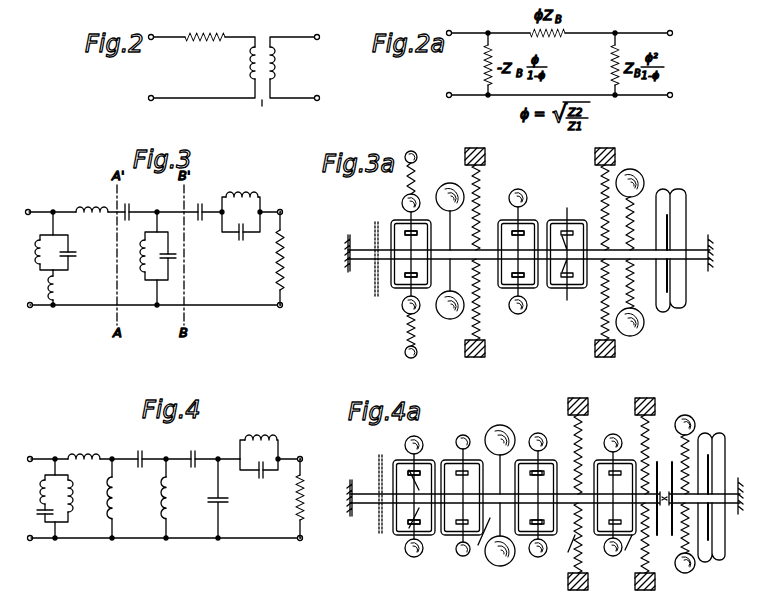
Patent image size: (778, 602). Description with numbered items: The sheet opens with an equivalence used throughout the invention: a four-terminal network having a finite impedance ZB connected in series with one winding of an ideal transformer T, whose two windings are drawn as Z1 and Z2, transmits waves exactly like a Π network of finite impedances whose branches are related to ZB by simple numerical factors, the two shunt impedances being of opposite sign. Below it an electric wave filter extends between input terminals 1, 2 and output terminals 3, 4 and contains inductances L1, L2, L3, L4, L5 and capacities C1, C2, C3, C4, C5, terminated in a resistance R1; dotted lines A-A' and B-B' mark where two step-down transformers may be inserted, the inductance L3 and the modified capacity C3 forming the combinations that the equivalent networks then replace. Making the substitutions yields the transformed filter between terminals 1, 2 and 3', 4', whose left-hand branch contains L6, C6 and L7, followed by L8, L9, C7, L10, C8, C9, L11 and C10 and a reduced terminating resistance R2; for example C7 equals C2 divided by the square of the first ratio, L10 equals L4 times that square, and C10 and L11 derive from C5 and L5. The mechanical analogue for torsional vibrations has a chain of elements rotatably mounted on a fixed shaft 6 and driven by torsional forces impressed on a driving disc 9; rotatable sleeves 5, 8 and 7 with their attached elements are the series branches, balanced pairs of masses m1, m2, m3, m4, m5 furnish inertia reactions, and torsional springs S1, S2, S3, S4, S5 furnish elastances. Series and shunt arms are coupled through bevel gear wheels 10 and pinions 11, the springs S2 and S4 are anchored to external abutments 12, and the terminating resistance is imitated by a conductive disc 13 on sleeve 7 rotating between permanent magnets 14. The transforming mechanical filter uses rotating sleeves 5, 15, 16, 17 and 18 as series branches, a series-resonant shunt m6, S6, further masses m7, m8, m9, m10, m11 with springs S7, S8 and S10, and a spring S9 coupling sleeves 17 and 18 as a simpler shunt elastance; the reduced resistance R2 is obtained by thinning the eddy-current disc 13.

In FIG. 3, the terminal 1 is at (28, 199).
In FIG. 4, the terminal 1 is at (28, 447).
In FIG. 3, the terminal 2 is at (25, 316).
In FIG. 4, the terminal 2 is at (26, 550).
In FIG. 3, the terminal 3 is at (281, 199).
In FIG. 3, the terminal 4 is at (285, 314).
In FIG. 4, the terminal 3' is at (307, 447).
In FIG. 4, the output terminal 4' is at (308, 547).
In FIG. 3A, the rotatable sleeve 5 is at (385, 247).
In FIG. 4A, the rotatable sleeve 5 is at (384, 482).
In FIG. 3A, the fixed shaft 6 is at (350, 262).
In FIG. 4A, the fixed shaft 6 is at (352, 510).
In FIG. 3A, the rotatable sleeve 7 is at (645, 247).
In FIG. 3A, the rotatable sleeve 8 is at (452, 246).
In FIG. 3A, the driving disc 9 is at (374, 276).
In FIG. 4A, the driving disc 9 is at (380, 528).
In FIG. 3A, the bevel gear wheels 10 is at (585, 283).
In FIG. 4A, the bevel gear wheels 10 is at (500, 468).
In FIG. 3A, the pinions 11 is at (506, 288).
In FIG. 4A, the pinions 11 is at (430, 533).
In FIG. 3A, the external abutments 12 is at (582, 350).
In FIG. 4A, the external abutments 12 is at (622, 592).
In FIG. 3A, the conductive disc 13 is at (670, 275).
In FIG. 4A, the conductive disc 13 is at (712, 514).
In FIG. 3A, the permanent magnets 14 is at (672, 310).
In FIG. 4A, the permanent magnets 14 is at (710, 433).
In FIG. 4A, the rotating sleeve 15 is at (478, 545).
In FIG. 4A, the rotating sleeve 16 is at (568, 552).
In FIG. 4A, the rotating sleeve 17 is at (625, 550).
In FIG. 4A, the rotating sleeve 18 is at (692, 485).
In FIG. 2, the impedance ZB is at (205, 27).
In FIG. 2, the primary winding impedance Z1 is at (242, 64).
In FIG. 2, the secondary winding impedance Z2 is at (283, 64).
In FIG. 2, the ideal transformer T is at (263, 109).
In FIG. 3, the inductance L1 is at (38, 252).
In FIG. 3, the inductance L2 is at (62, 287).
In FIG. 3, the inductance L3 is at (92, 200).
In FIG. 3, the inductance L4 is at (142, 262).
In FIG. 3, the inductance L5 is at (248, 188).
In FIG. 4, the inductance L6 is at (38, 484).
In FIG. 4, the inductance L7 is at (82, 500).
In FIG. 4, the inductance L8 is at (84, 447).
In FIG. 4, the inductance L9 is at (121, 498).
In FIG. 4, the inductance L10 is at (178, 498).
In FIG. 4, the inductance L11 is at (268, 432).
In FIG. 3, the capacity C1 is at (71, 252).
In FIG. 3, the capacity C2 is at (135, 204).
In FIG. 3, the capacity C3 is at (163, 256).
In FIG. 3, the capacitance C4 is at (204, 222).
In FIG. 3, the capacity C5 is at (242, 240).
In FIG. 4, the capacitance C6 is at (36, 512).
In FIG. 4, the capacity C7 is at (138, 452).
In FIG. 4, the capacity C8 is at (193, 450).
In FIG. 4, the capacity C9 is at (224, 498).
In FIG. 4, the capacity C10 is at (258, 480).
In FIG. 3, the resistance R1 is at (289, 258).
In FIG. 4, the resistance R2 is at (309, 498).
In FIG. 3A, the mass m1 is at (405, 352).
In FIG. 3A, the mass m2 is at (400, 252).
In FIG. 3A, the mass m3 is at (450, 251).
In FIG. 3A, the mass m4 is at (519, 250).
In FIG. 3A, the mass m5 is at (632, 254).
In FIG. 4A, the mass m6 is at (406, 498).
In FIG. 4A, the mass m7 is at (456, 435).
In FIG. 4A, the mass m8 is at (498, 497).
In FIG. 4A, the mass m9 is at (534, 492).
In FIG. 4A, the mass m10 is at (609, 485).
In FIG. 4A, the mass m11 is at (689, 493).
In FIG. 3A, the spring S1 is at (393, 330).
In FIG. 3A, the spring S2 is at (484, 252).
In FIG. 3A, the spring S3 is at (563, 253).
In FIG. 3A, the spring S4 is at (596, 252).
In FIG. 3A, the spring S5 is at (637, 252).
In FIG. 4A, the spring S6 is at (405, 535).
In FIG. 4A, the spring S7 is at (577, 494).
In FIG. 4A, the spring S8 is at (646, 494).
In FIG. 4A, the spring S9 is at (665, 512).
In FIG. 4A, the spring S10 is at (673, 493).